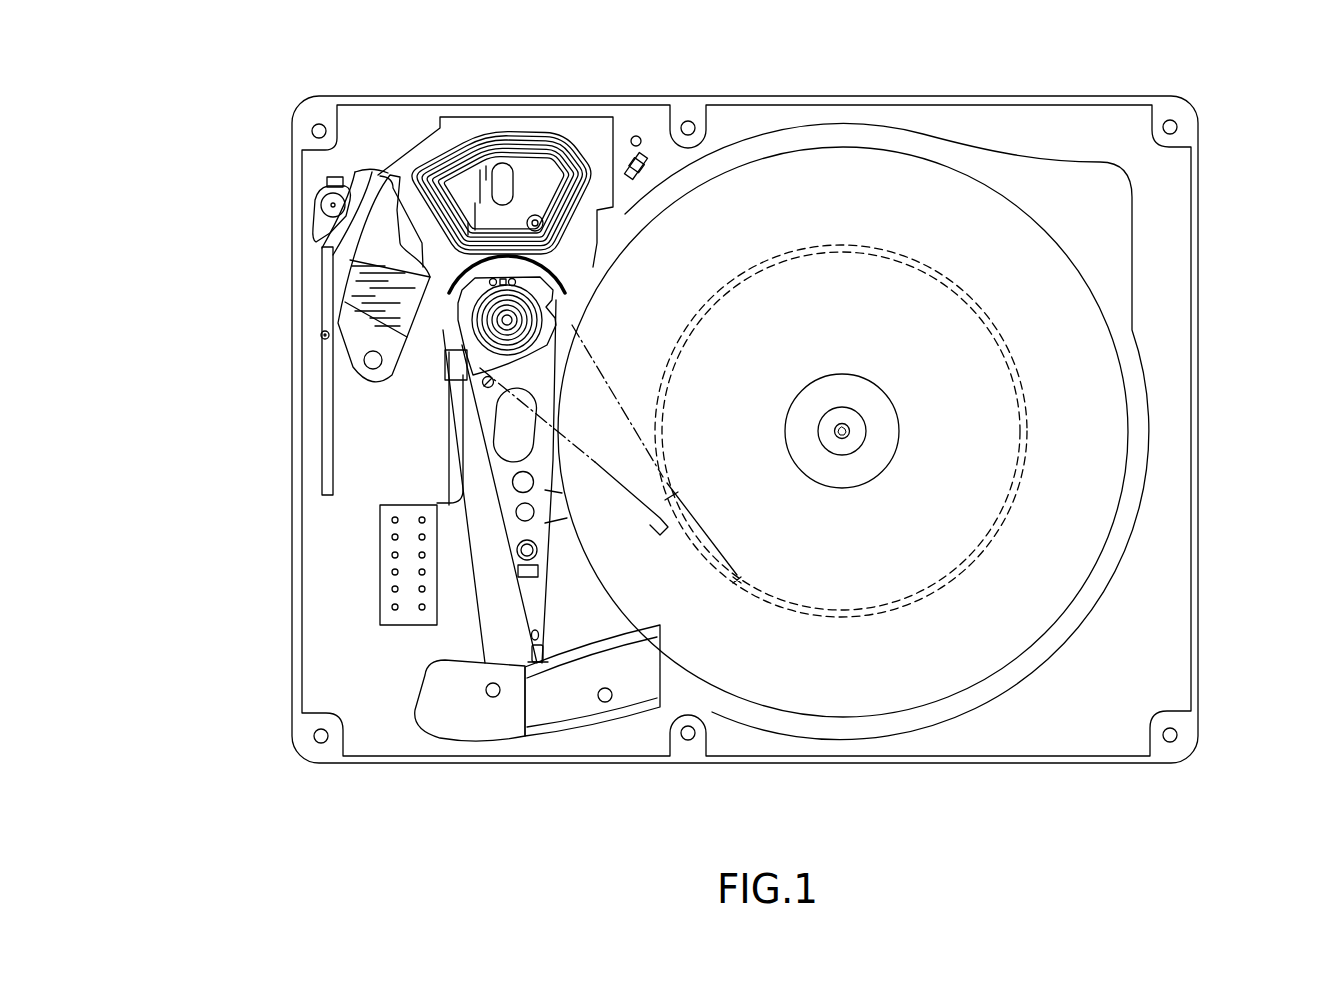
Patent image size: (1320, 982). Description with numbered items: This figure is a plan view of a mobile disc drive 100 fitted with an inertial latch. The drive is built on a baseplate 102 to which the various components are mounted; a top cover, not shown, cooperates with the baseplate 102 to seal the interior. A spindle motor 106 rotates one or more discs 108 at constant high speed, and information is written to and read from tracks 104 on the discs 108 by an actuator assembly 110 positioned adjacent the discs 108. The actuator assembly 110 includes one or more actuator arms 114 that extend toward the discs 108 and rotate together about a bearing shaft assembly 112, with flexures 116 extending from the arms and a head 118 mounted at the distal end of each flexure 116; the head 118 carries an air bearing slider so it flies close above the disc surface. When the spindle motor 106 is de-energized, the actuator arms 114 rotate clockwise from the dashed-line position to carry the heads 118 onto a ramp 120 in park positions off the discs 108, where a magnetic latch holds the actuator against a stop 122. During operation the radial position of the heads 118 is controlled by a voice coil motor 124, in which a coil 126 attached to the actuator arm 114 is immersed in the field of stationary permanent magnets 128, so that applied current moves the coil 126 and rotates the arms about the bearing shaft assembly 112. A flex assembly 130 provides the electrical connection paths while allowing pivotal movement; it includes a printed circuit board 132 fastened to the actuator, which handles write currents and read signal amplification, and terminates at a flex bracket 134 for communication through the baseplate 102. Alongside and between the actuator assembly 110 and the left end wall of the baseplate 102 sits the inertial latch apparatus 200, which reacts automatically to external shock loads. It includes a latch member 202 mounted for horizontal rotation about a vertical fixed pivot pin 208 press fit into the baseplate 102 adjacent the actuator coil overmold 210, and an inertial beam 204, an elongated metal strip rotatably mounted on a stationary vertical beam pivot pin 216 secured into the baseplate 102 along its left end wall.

The mobile disc drive 100 is at (795, 465).
The baseplate 102 is at (1203, 576).
The data tracks on disk 104 is at (806, 612).
The spindle motor 106 is at (888, 396).
The disc 108 is at (915, 165).
The actuator assembly 110 is at (588, 455).
The bearing shaft assembly 112 is at (508, 320).
The actuator arm 114 is at (492, 442).
The flexure 116 is at (533, 597).
The head 118 is at (739, 580).
The ramp 120 is at (556, 727).
The stop 122 is at (645, 170).
The voice coil motor 124 is at (495, 147).
The coil 126 is at (562, 153).
The permanent magnet 128 is at (363, 290).
The flex assembly 130 is at (465, 428).
The printed circuit board 132 is at (447, 365).
The flex bracket 134 is at (403, 544).
The inertial latch apparatus 200 is at (291, 316).
The latch member 202 is at (353, 192).
The inertial beam 204 is at (320, 440).
The pivot pin 208 is at (316, 204).
The actuator coil overmold 210 is at (543, 177).
The beam pivot pin 216 is at (323, 337).